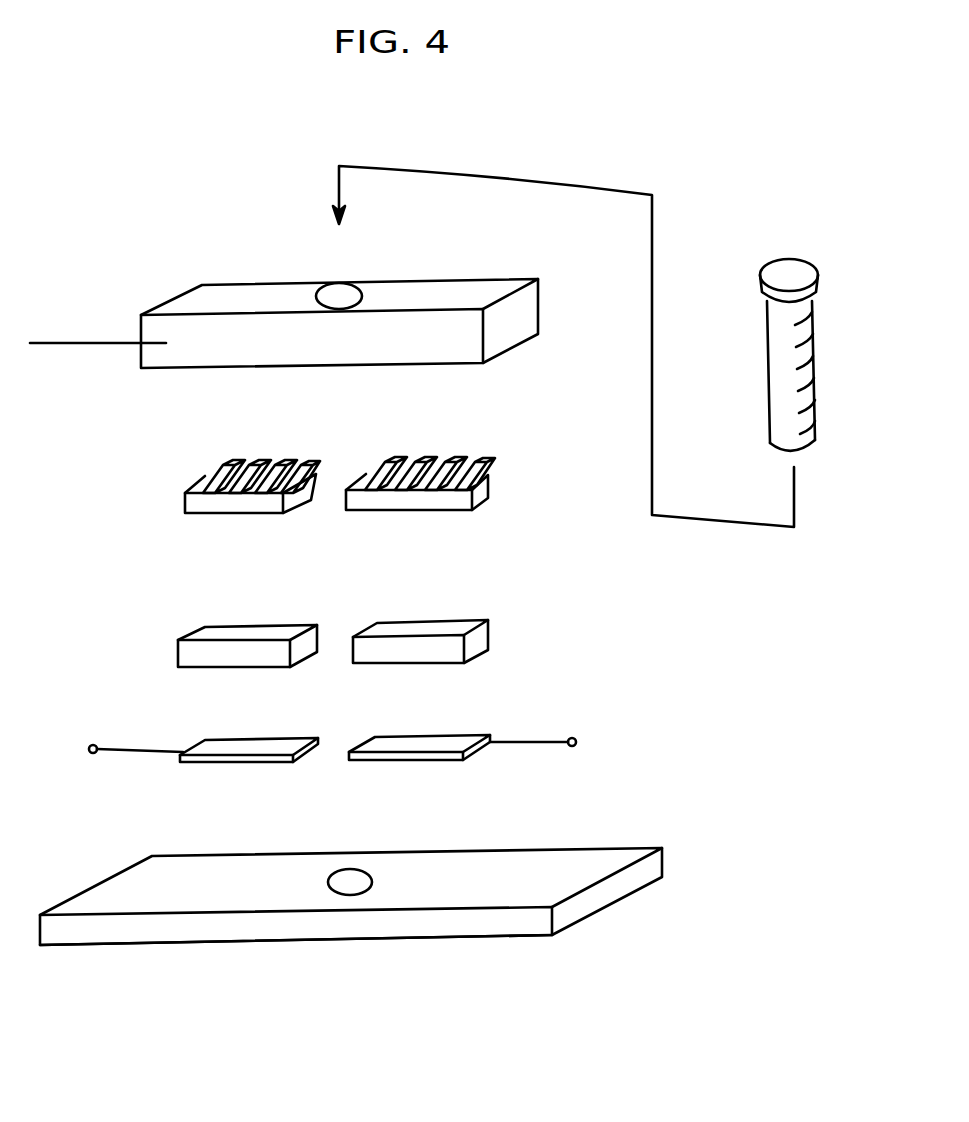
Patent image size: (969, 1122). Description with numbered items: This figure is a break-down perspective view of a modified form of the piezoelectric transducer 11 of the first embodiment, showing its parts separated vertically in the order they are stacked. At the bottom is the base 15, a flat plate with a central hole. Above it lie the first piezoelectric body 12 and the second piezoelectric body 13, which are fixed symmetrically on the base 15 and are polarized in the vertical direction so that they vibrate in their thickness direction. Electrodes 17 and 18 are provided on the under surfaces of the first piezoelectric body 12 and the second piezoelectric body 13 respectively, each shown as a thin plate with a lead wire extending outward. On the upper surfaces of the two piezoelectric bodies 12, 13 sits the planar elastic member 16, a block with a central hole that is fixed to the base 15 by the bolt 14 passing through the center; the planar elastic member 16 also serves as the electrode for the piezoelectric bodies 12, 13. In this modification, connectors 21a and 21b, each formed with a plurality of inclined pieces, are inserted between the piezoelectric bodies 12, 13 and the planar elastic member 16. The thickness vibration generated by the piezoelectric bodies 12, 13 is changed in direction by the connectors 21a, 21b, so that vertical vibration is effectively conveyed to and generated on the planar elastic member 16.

The transducer 11 is at (355, 947).
The first piezoelectric body 12 is at (306, 648).
The second piezoelectric body 13 is at (478, 644).
The bolt 14 is at (800, 278).
The base 15 is at (533, 868).
The planar elastic member 16 is at (450, 293).
The electrode 17 is at (288, 745).
The electrode 18 is at (463, 742).
The connector 21a is at (313, 480).
The connector 21b is at (488, 478).